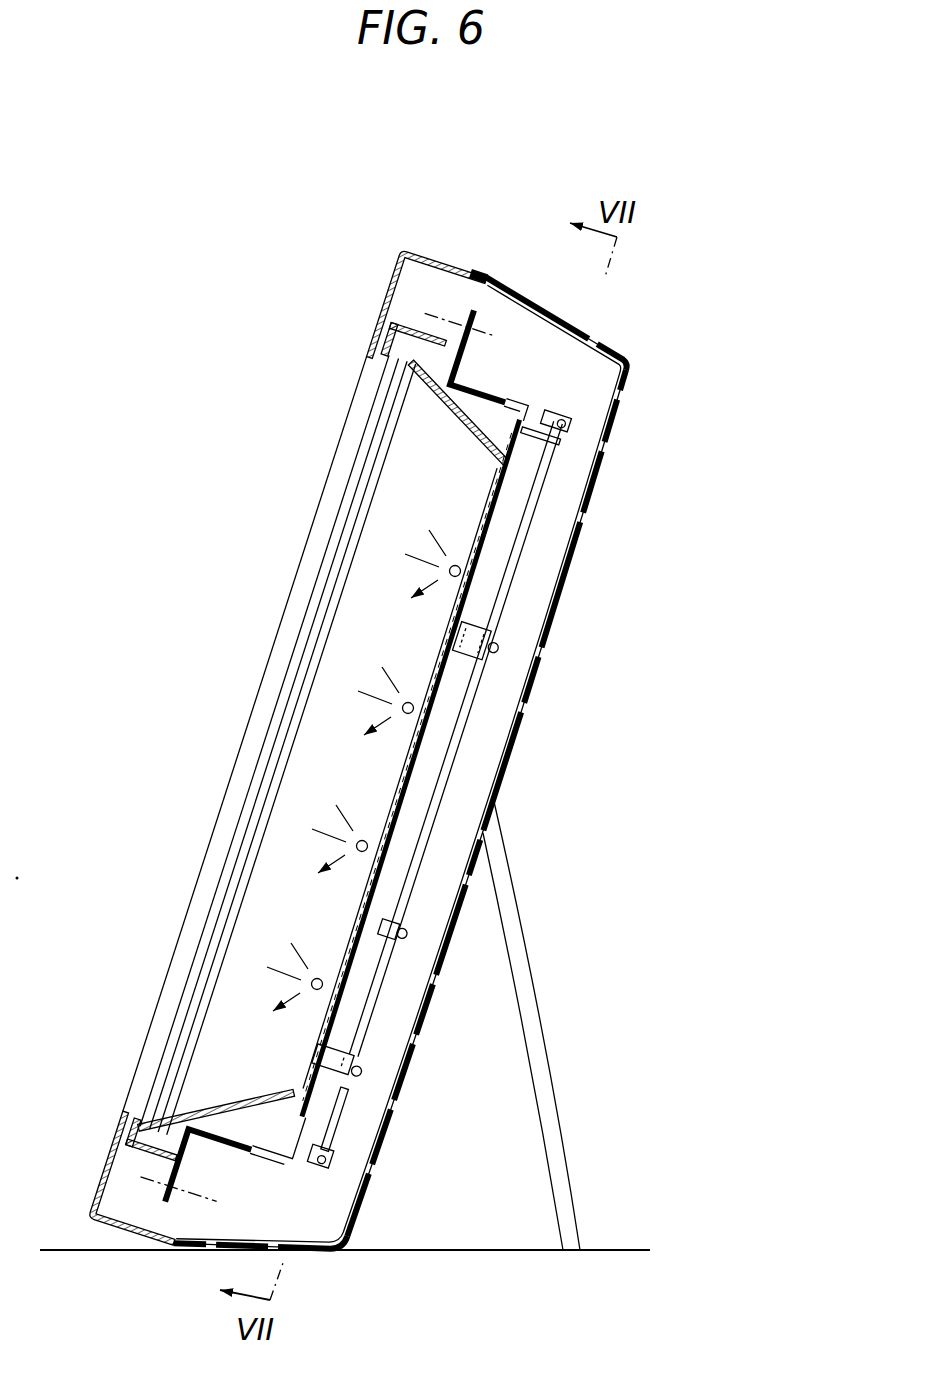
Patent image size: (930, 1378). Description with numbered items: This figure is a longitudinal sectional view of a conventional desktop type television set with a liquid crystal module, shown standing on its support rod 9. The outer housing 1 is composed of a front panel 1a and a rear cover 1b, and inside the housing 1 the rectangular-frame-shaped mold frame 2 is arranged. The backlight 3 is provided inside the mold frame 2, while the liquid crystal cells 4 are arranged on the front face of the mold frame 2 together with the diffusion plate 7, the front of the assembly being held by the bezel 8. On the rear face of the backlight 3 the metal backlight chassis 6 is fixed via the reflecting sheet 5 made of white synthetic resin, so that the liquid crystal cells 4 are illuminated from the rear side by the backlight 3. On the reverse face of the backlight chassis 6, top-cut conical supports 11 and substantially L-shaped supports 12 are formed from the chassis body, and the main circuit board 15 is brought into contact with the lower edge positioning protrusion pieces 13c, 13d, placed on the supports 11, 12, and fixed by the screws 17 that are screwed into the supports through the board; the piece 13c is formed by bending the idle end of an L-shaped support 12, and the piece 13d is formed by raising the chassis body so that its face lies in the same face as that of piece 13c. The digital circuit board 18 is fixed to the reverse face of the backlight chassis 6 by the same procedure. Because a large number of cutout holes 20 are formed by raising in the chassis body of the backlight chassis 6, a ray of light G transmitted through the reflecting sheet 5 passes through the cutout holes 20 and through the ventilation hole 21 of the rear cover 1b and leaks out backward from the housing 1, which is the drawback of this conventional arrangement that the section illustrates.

The housing 1 is at (528, 195).
The front panel 1a is at (403, 246).
The rear cover 1b is at (507, 278).
The mold frame 2 is at (500, 447).
The backlight 3 is at (410, 702).
The liquid crystal cells 4 is at (307, 620).
The reflecting sheet 5 is at (425, 770).
The backlight chassis 6 is at (450, 773).
The diffusion plate 7 is at (270, 810).
The bezel 8 is at (395, 322).
The support rod 9 is at (539, 1063).
The top-cut conical support 11 is at (386, 922).
The substantially L-shaped support 12 is at (537, 440).
The lower edge positioning protrusion piece 13c is at (327, 1077).
The lower edge positioning protrusion piece 13d is at (447, 1096).
The main circuit board 15 is at (545, 448).
The screw 17 is at (557, 422).
The digital circuit board 18 is at (342, 1113).
The cutout hole 20 is at (517, 405).
The ventilation hole 21 is at (596, 333).
The ray of light G is at (508, 420).